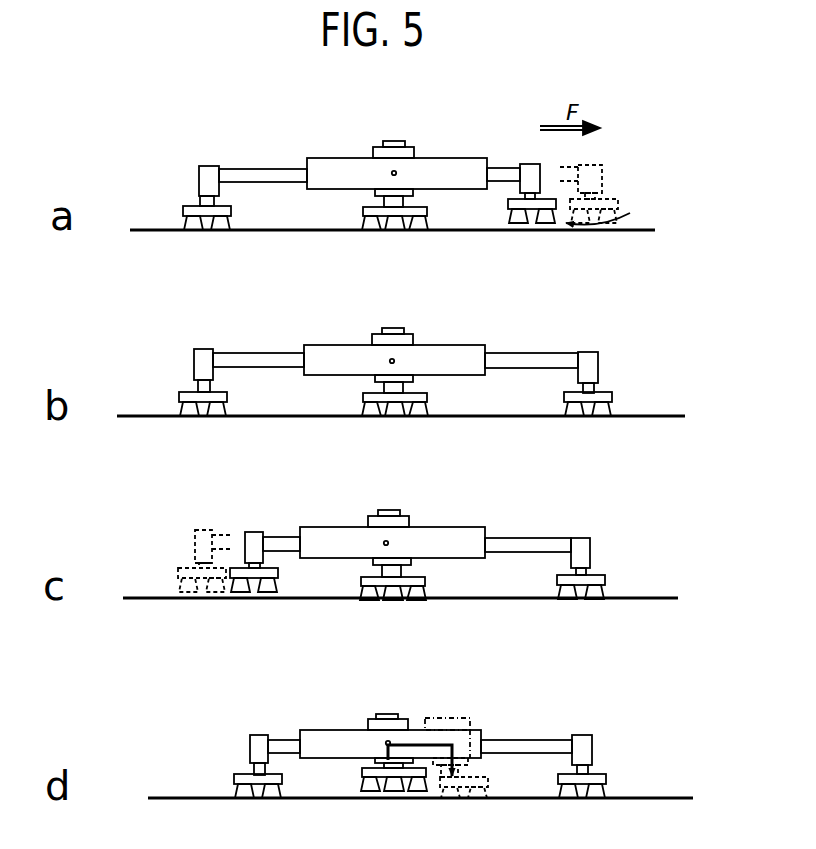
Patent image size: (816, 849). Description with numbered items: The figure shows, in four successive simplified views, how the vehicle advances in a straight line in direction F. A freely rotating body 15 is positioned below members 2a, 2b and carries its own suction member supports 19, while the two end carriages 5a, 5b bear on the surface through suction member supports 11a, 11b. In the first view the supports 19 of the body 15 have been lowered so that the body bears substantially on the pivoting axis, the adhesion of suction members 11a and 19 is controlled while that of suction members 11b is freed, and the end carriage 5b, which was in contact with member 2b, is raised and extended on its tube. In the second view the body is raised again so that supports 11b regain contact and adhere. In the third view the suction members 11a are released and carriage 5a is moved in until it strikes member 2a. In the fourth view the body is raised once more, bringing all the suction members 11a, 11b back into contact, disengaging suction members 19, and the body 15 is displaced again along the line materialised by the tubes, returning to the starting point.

In FIG. 5a, the member 2a is at (268, 168).
In FIG. 5a, the member 2b is at (498, 175).
In FIG. 5a, the carriage 5a is at (207, 167).
In FIG. 5b, the carriage 5a is at (207, 352).
In FIG. 5c, the carriage 5a is at (253, 532).
In FIG. 5d, the carriage 5a is at (262, 735).
In FIG. 5a, the carriage 5b is at (525, 165).
In FIG. 5b, the carriage 5b is at (590, 362).
In FIG. 5c, the carriage 5b is at (580, 540).
In FIG. 5d, the carriage 5b is at (582, 735).
In FIG. 5a, the suction member support 11a is at (174, 215).
In FIG. 5b, the suction member support 11a is at (172, 406).
In FIG. 5c, the suction member support 11a is at (226, 586).
In FIG. 5d, the suction member support 11a is at (220, 789).
In FIG. 5a, the suction member support 11b is at (595, 195).
In FIG. 5b, the suction member support 11b is at (658, 407).
In FIG. 5c, the suction member support 11b is at (612, 593).
In FIG. 5d, the suction member support 11b is at (648, 781).
In FIG. 5a, the body 15 is at (413, 148).
In FIG. 5b, the body 15 is at (410, 345).
In FIG. 5c, the body 15 is at (372, 520).
In FIG. 5d, the body 15 is at (372, 728).
In FIG. 5a, the support 19 is at (348, 222).
In FIG. 5b, the support 19 is at (352, 411).
In FIG. 5c, the support 19 is at (427, 597).
In FIG. 5d, the support 19 is at (348, 793).